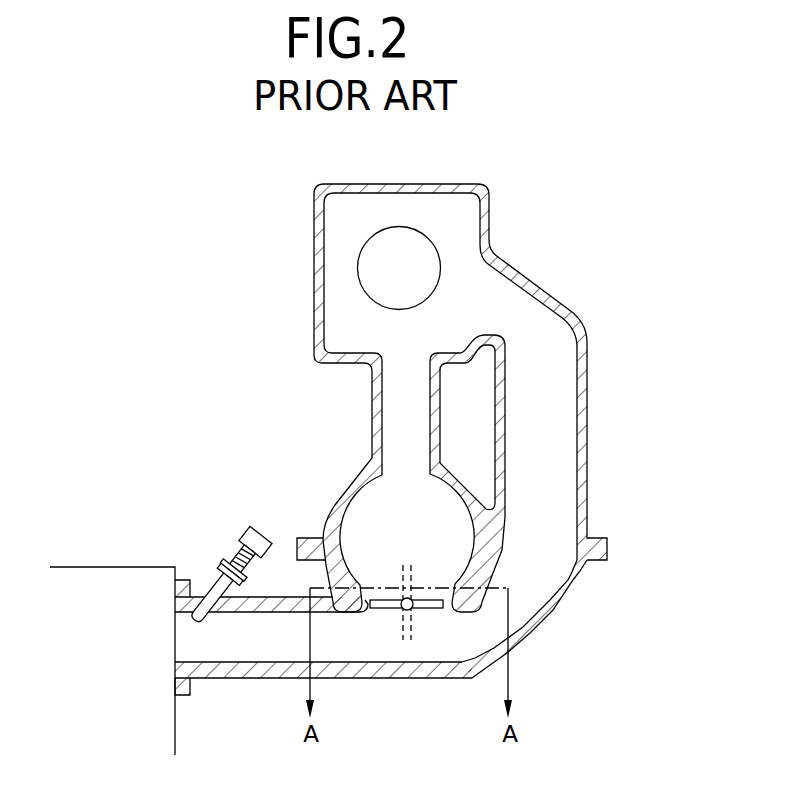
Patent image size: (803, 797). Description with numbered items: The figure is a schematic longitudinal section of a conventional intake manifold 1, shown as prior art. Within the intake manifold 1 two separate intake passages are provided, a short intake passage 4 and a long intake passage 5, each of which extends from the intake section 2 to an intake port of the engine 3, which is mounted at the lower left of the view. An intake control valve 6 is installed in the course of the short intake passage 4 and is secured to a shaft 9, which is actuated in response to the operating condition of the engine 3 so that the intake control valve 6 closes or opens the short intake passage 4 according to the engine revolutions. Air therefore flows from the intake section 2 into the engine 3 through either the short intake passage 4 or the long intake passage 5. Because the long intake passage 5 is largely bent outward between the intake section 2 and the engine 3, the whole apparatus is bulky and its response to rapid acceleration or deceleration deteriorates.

The intake manifold 1 is at (590, 598).
The intake section 2 is at (412, 240).
The engine 3 is at (133, 577).
The short intake passage 4 is at (402, 460).
The long intake passage 5 is at (565, 418).
The intake control valve 6 is at (433, 607).
The shaft 9 is at (405, 605).